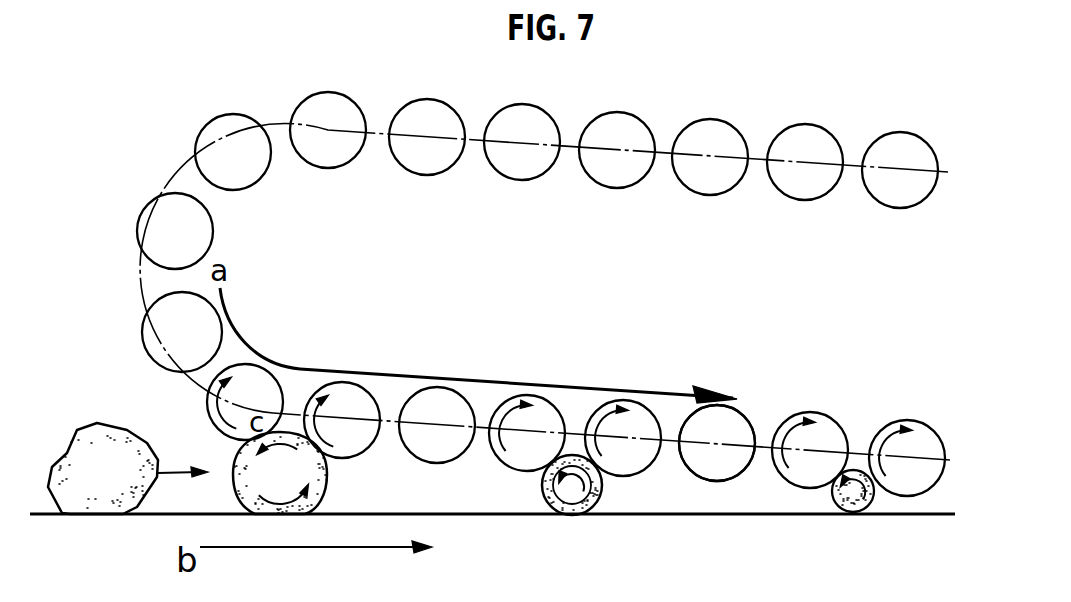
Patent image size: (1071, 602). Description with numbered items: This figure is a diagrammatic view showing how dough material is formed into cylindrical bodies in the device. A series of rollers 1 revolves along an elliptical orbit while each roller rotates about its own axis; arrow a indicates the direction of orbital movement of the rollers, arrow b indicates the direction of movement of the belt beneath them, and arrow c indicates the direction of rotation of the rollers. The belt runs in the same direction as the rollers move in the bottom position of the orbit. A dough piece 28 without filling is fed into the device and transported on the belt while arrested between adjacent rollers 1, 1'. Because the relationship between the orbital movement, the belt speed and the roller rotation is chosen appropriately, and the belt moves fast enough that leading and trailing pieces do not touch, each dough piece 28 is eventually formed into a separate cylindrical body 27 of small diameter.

The roller 1 is at (629, 451).
The roller 1' is at (729, 455).
The cylindrical body 27 is at (845, 498).
The dough piece 28 is at (97, 433).